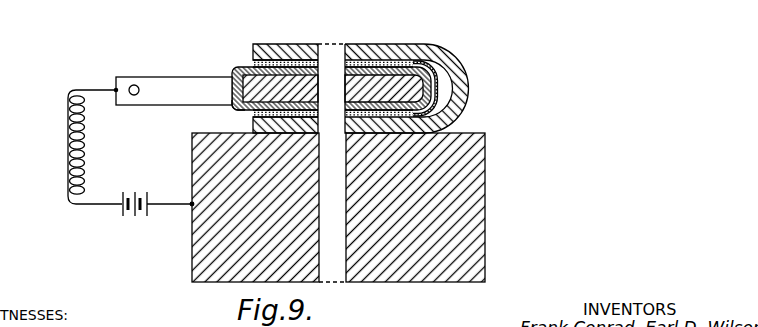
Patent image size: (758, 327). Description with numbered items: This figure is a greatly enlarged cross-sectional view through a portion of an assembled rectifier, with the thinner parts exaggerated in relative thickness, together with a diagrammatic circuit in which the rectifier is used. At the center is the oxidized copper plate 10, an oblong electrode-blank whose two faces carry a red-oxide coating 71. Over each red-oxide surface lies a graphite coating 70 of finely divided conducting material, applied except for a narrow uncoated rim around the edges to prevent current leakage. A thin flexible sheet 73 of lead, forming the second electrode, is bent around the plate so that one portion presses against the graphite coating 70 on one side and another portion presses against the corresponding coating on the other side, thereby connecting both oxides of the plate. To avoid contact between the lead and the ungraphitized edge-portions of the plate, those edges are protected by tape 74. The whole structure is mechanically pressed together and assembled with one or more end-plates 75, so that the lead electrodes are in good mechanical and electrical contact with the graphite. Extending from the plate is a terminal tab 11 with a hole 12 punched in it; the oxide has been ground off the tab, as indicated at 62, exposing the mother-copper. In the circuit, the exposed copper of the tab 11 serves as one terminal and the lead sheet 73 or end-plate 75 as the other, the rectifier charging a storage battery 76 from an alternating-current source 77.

The oxidized copper plate 10 is at (237, 70).
The terminal tab 11 is at (189, 77).
The hole 12 is at (136, 86).
The ground-off region of the tab 62 is at (231, 106).
The graphite coating 70 is at (407, 62).
The red-oxide coating 71 is at (252, 68).
The lead sheet 73 is at (297, 44).
The tape 74 is at (438, 74).
The end-plate 75 is at (486, 148).
The storage battery 76 is at (136, 192).
The alternating-current source 77 is at (68, 139).